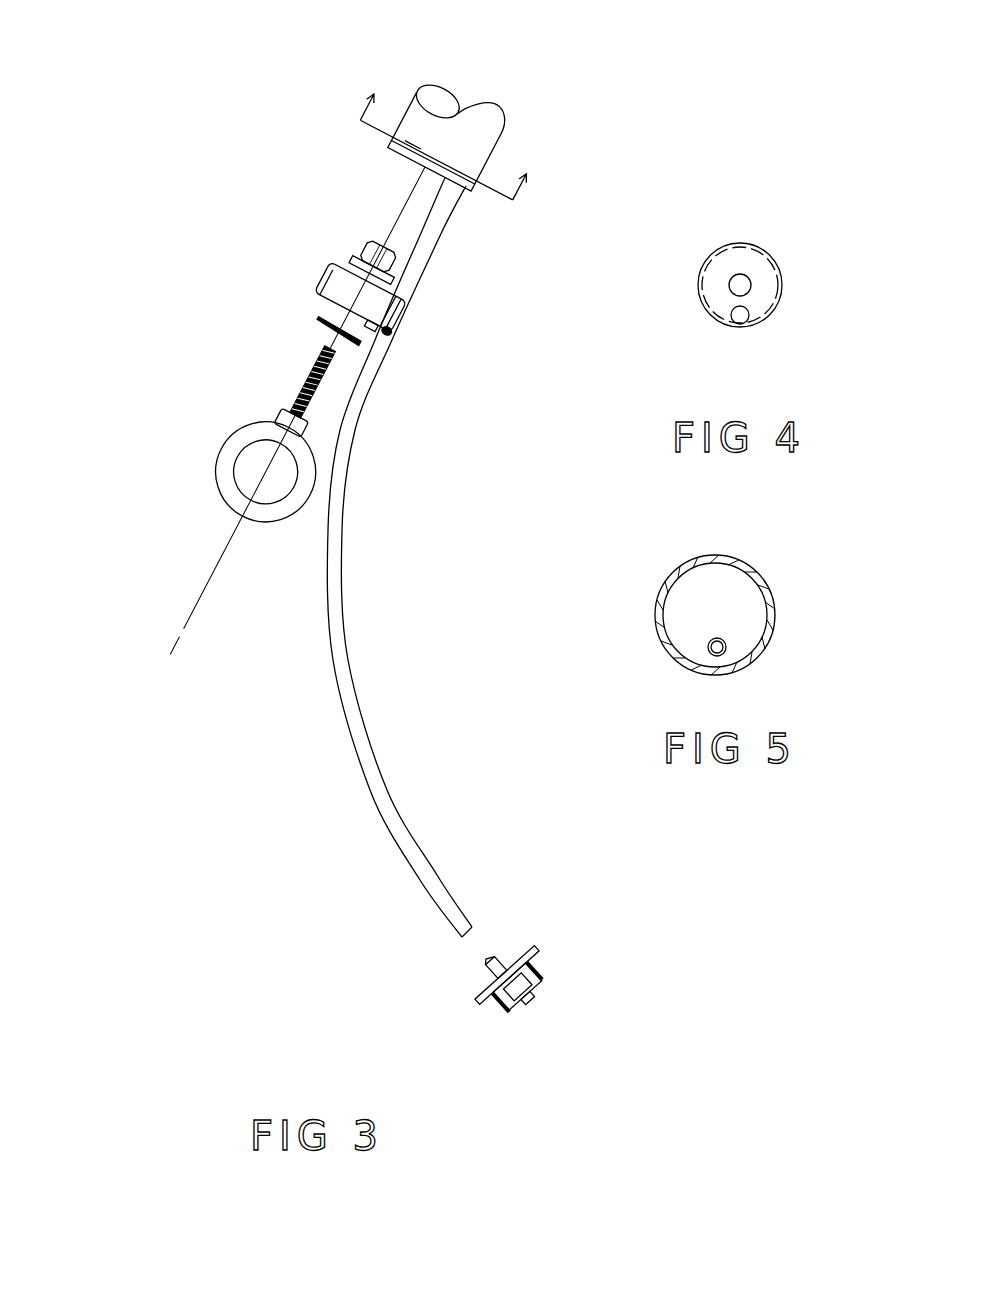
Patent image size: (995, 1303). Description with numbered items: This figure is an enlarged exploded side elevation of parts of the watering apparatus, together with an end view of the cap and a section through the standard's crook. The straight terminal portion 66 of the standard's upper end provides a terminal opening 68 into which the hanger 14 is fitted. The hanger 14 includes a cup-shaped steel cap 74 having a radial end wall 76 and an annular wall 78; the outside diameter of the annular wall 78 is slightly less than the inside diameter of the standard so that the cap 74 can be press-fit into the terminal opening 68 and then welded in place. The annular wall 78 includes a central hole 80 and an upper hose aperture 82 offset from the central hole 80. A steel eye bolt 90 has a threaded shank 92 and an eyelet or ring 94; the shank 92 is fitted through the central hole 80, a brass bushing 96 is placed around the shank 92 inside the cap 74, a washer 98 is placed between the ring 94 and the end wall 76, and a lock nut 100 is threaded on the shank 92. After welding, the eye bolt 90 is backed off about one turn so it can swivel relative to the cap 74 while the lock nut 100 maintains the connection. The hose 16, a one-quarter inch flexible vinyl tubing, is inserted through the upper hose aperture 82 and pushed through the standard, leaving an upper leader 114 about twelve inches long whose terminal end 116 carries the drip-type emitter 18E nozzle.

In FIG. 3, the hanger 14 is at (297, 410).
In FIG. 5, the hose 16 is at (723, 650).
In FIG. 3, the drip-type emitter 18E is at (500, 1002).
In FIG. 3, the terminal portion 66 is at (450, 130).
In FIG. 5, the terminal portion 66 is at (737, 558).
In FIG. 3, the terminal opening 68 is at (434, 159).
In FIG. 3, the cap 74 is at (354, 309).
In FIG. 4, the cap 74 is at (744, 294).
In FIG. 3, the radial end wall 76 is at (360, 297).
In FIG. 4, the radial end wall 76 is at (722, 270).
In FIG. 3, the annular wall 78 is at (390, 312).
In FIG. 4, the annular wall 78 is at (773, 257).
In FIG. 3, the central hole 80 is at (386, 331).
In FIG. 4, the central hole 80 is at (732, 293).
In FIG. 3, the upper hose aperture 82 is at (371, 326).
In FIG. 4, the upper hose aperture 82 is at (745, 317).
In FIG. 3, the eye bolt 90 is at (268, 465).
In FIG. 3, the threaded shank 92 is at (312, 382).
In FIG. 3, the ring 94 is at (265, 472).
In FIG. 3, the brass bushing 96 is at (371, 270).
In FIG. 3, the washer 98 is at (338, 331).
In FIG. 3, the lock nut 100 is at (378, 256).
In FIG. 3, the upper leader 114 is at (490, 557).
In FIG. 3, the terminal end 116 is at (474, 930).